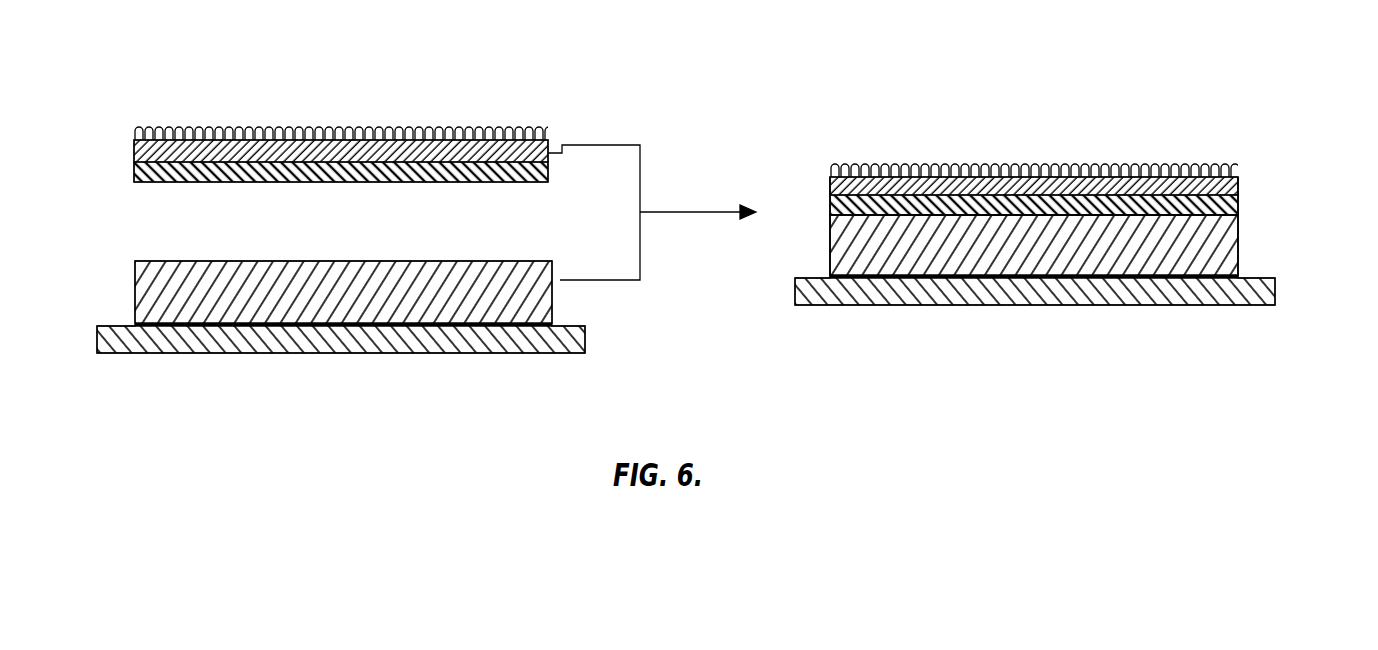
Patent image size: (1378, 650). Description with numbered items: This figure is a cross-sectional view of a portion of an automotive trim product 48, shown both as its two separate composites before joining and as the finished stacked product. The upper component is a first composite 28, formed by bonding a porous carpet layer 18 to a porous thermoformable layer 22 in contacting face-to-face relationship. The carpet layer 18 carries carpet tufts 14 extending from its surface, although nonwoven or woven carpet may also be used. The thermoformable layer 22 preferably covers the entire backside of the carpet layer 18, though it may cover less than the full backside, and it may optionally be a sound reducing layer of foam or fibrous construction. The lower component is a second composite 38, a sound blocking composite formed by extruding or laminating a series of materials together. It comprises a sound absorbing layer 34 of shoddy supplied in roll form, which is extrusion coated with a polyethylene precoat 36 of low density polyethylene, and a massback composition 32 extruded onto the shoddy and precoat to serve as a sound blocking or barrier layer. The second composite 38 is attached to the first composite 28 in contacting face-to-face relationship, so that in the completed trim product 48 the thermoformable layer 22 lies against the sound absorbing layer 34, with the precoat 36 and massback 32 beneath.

The carpet tufts 14 is at (358, 118).
The porous carpet layer 18 is at (140, 145).
The porous thermoformable layer 22 is at (134, 163).
The first composite 28 is at (453, 94).
The massback composition 32 is at (583, 338).
The sound absorbing layer 34 is at (545, 292).
The polyethylene precoat 36 is at (135, 324).
The second composite 38 is at (350, 372).
The automotive trim product 48 is at (998, 113).